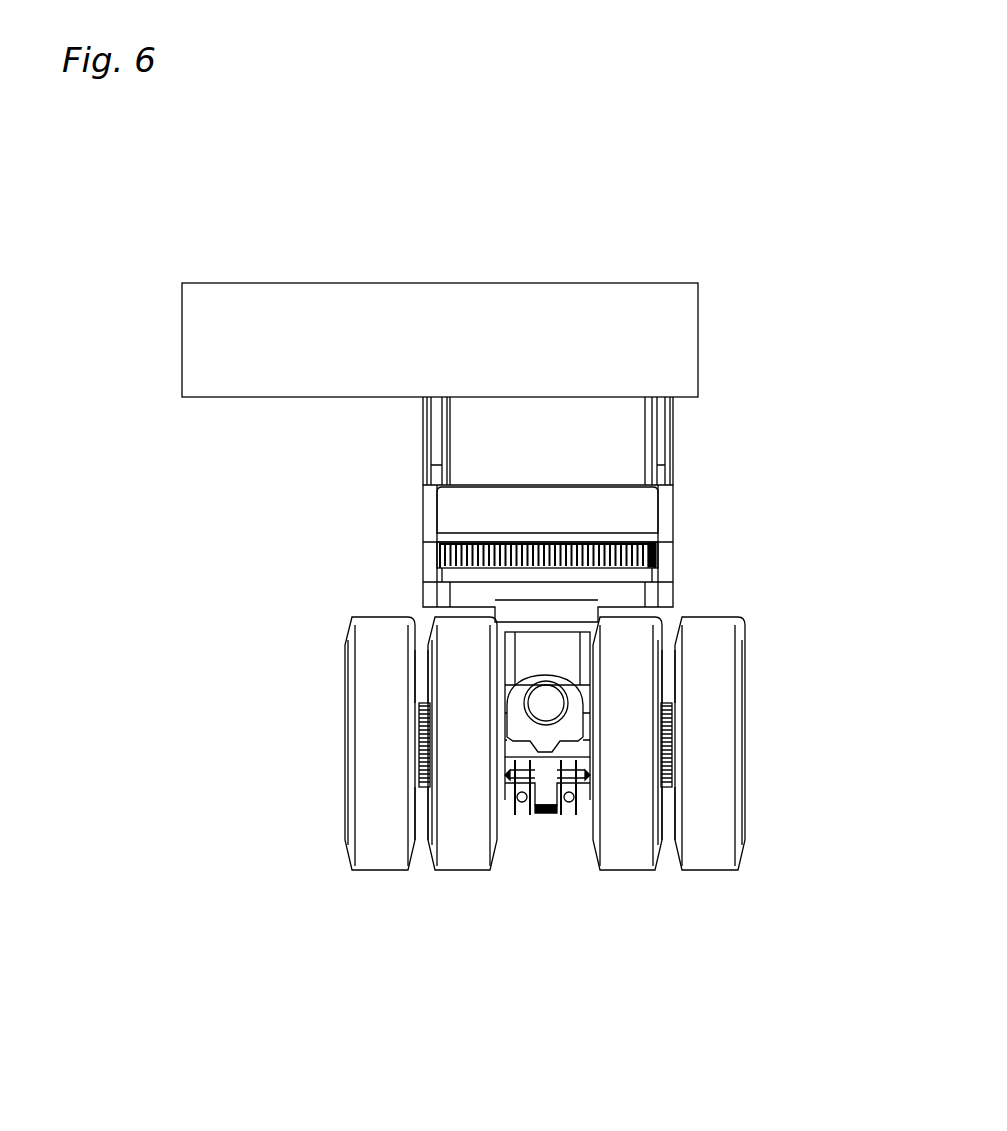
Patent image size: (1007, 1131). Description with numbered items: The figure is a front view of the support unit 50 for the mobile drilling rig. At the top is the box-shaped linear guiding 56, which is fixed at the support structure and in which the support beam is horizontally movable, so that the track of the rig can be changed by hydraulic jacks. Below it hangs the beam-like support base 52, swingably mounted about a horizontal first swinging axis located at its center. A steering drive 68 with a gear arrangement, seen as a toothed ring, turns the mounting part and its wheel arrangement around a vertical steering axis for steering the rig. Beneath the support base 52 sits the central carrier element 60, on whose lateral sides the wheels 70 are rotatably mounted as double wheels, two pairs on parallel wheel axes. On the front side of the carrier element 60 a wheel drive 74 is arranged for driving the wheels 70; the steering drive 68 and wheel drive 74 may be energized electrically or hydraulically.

The support unit 50 is at (762, 137).
The support base 52 is at (608, 508).
The linear guiding 56 is at (393, 298).
The carrier element 60 is at (525, 652).
The steering drive 68 is at (633, 557).
The wheels 70 is at (392, 857).
The wheel drive 74 is at (543, 708).